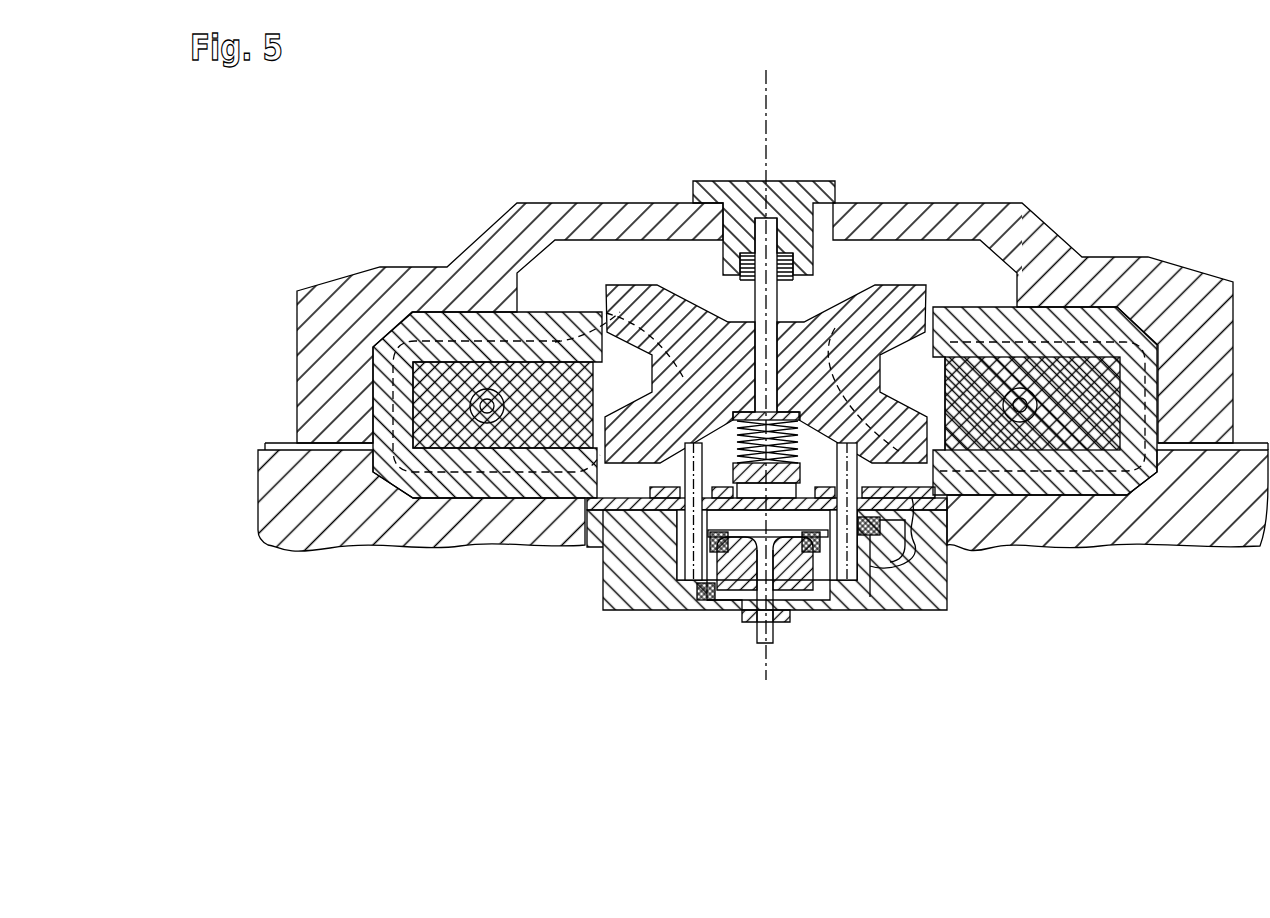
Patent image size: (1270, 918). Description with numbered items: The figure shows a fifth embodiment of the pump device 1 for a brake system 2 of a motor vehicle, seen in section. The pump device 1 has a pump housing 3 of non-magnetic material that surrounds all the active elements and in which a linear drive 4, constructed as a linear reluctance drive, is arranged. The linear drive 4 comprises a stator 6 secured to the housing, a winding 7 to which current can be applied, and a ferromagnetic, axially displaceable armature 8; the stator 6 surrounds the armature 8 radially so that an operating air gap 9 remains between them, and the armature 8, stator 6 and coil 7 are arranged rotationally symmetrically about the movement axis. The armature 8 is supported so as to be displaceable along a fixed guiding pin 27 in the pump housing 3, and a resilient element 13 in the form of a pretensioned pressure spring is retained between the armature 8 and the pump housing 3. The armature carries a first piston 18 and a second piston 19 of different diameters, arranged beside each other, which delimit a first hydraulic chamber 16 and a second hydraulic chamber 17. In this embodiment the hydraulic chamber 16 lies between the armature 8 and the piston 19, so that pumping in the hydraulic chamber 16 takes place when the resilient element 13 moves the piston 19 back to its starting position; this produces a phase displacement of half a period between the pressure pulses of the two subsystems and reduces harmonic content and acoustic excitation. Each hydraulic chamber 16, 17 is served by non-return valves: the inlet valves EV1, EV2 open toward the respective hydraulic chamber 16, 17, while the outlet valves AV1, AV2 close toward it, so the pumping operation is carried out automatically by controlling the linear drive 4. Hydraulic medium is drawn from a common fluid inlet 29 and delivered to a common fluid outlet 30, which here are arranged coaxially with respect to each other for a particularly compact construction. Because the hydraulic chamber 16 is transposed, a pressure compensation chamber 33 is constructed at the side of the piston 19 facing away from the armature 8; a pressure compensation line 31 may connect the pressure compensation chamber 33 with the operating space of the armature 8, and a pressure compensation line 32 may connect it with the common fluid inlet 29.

The pump device 1 is at (356, 154).
The brake system 2 is at (1190, 202).
The pump housing 3 is at (948, 208).
The linear drive 4 is at (595, 299).
The stator 6 is at (1090, 500).
The winding 7 is at (1082, 483).
The armature 8 is at (650, 300).
The operating air gap 9 is at (598, 285).
The resilient element 13 is at (677, 527).
The first hydraulic chamber 16 is at (910, 543).
The second hydraulic chamber 17 is at (657, 610).
The first piston 18 is at (685, 566).
The second piston 19 is at (870, 615).
The guiding pin 27 is at (775, 303).
The common fluid inlet 29 is at (777, 620).
The common fluid outlet 30 is at (788, 618).
The pressure compensation line 31 is at (913, 550).
The pressure compensation line 32 is at (825, 615).
The pressure compensation chamber 33 is at (848, 615).
The non-return valve AV1 is at (707, 610).
The non-return valve EV1 is at (730, 610).
The non-return valve AV2 is at (900, 530).
The non-return valve EV2 is at (813, 615).